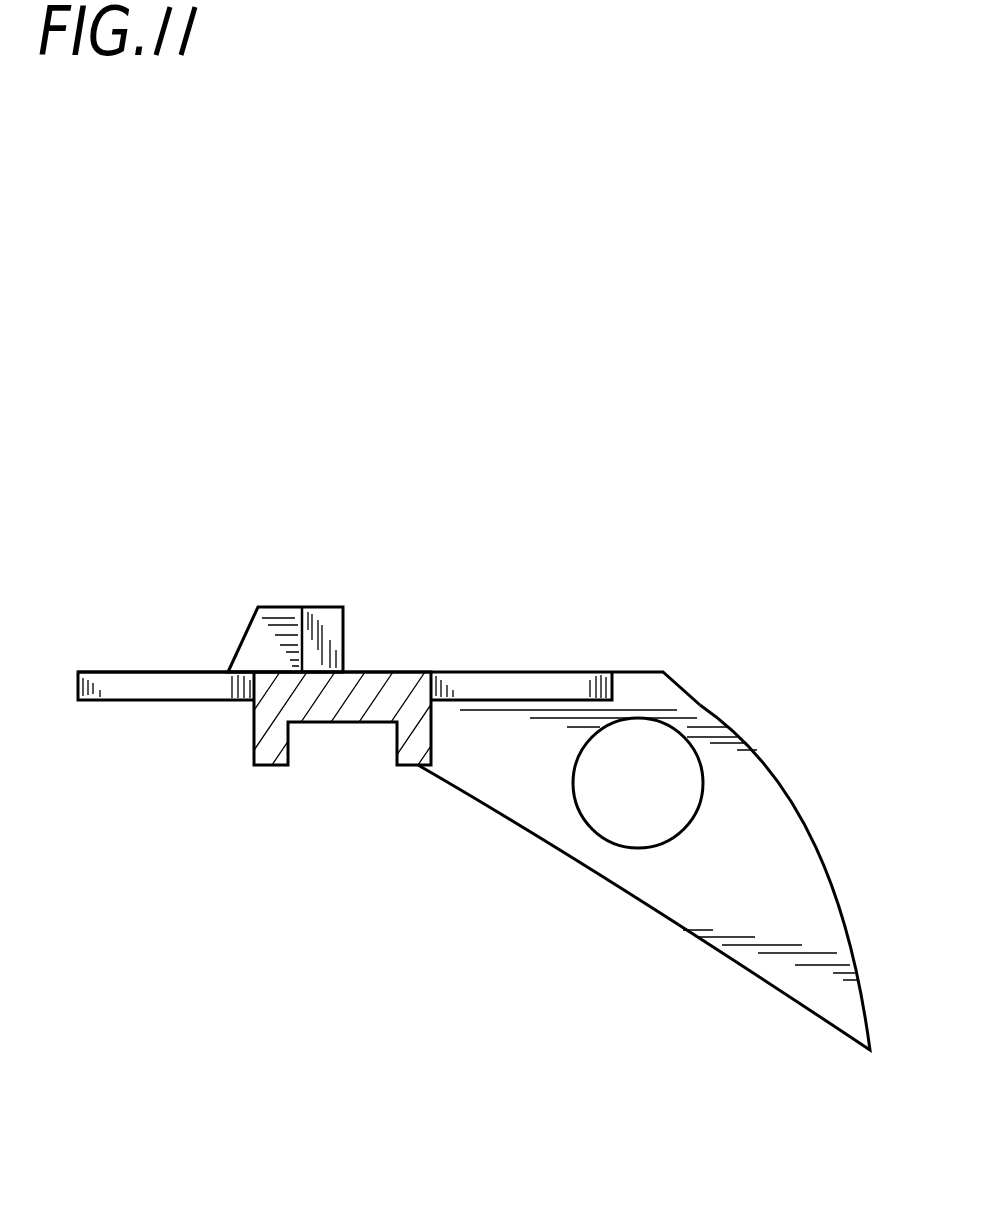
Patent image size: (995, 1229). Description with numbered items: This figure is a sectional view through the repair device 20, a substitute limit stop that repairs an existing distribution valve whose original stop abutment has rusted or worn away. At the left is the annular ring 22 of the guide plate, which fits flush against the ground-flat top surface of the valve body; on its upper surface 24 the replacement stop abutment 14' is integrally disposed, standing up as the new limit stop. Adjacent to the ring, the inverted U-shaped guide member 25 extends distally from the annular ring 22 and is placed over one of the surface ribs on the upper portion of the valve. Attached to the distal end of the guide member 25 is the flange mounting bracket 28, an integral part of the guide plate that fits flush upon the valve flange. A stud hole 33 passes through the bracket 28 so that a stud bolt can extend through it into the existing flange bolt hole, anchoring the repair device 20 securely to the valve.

The repair device 20 is at (524, 556).
The surface 24 is at (224, 650).
The replacement stop abutment 14' is at (319, 598).
The inverted U-shaped guide member 25 is at (403, 678).
The annular ring 22 is at (550, 683).
The flange mounting bracket 28 is at (779, 907).
The stud hole 33 is at (697, 742).